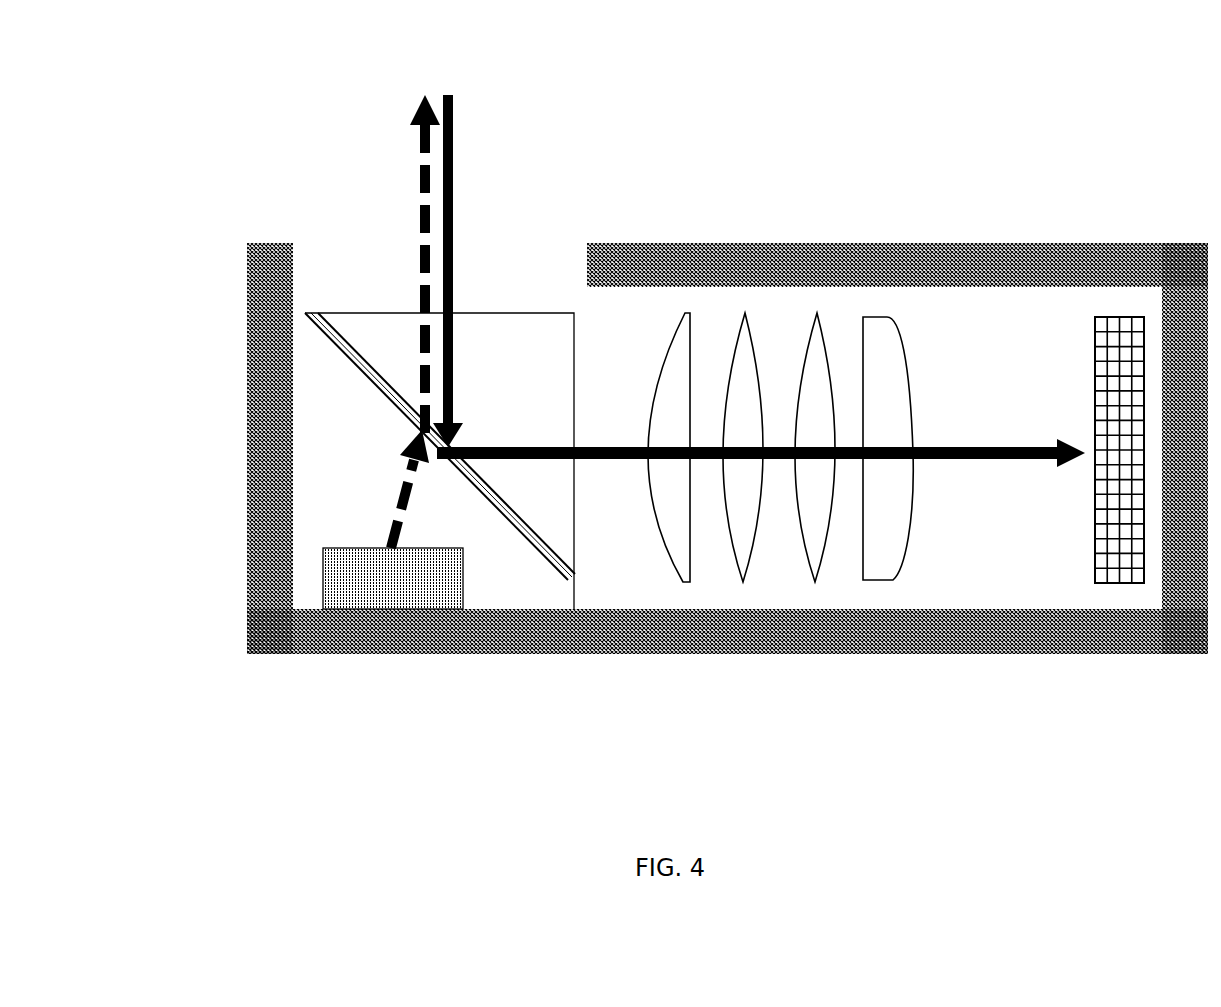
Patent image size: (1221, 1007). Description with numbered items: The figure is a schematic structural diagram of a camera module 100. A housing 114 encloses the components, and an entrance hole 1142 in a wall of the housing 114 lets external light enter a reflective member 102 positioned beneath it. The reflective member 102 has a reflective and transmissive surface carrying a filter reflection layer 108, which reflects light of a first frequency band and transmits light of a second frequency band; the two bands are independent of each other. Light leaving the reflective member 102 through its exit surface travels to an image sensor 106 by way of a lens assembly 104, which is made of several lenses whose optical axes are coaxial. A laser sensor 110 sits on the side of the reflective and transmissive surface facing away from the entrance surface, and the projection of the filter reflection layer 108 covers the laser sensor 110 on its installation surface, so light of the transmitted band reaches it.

The camera module 100 is at (802, 88).
The reflective member 102 is at (555, 533).
The lens assembly 104 is at (800, 546).
The image sensor 106 is at (1123, 550).
The filter reflection layer 108 is at (420, 408).
The laser sensor 110 is at (387, 593).
The housing 114 is at (247, 300).
The entrance hole 1142 is at (360, 233).